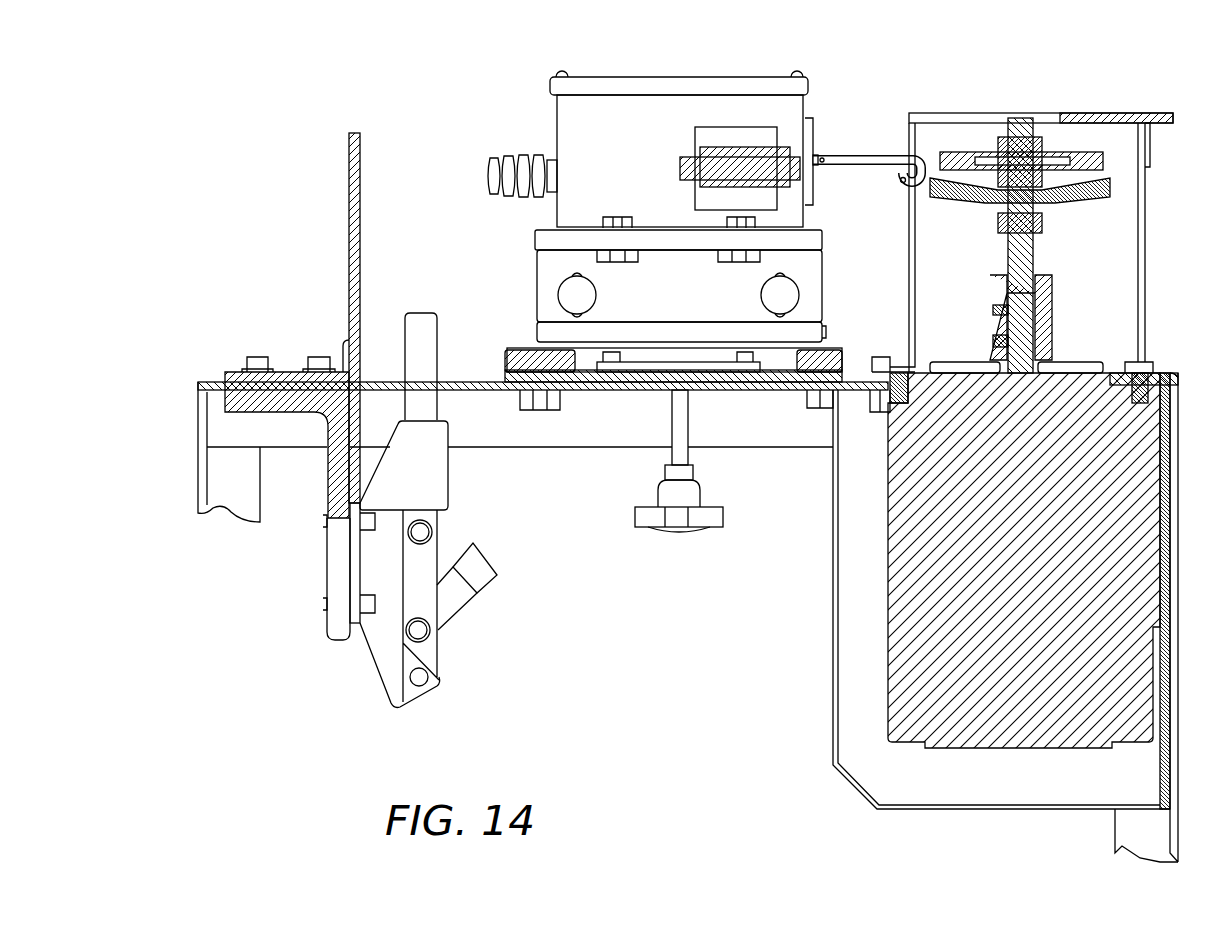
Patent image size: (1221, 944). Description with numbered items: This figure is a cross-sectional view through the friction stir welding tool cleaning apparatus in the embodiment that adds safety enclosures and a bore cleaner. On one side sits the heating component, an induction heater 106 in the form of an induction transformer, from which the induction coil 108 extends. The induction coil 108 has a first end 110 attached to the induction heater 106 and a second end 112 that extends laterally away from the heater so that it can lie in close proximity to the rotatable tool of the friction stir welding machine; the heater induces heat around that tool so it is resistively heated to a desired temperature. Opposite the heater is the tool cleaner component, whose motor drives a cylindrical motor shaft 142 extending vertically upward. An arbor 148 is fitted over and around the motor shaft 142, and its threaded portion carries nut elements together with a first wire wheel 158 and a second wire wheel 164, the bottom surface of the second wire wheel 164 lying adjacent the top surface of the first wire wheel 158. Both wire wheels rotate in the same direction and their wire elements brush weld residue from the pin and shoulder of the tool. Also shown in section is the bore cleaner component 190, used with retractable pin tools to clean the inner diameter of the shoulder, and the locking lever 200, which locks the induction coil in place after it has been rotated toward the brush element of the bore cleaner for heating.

The induction heater 106 is at (645, 77).
The induction coil 108 is at (870, 157).
The first end of induction coil 110 is at (490, 175).
The second end of induction coil 112 is at (927, 165).
The motor shaft 142 is at (1023, 322).
The arbor 148 is at (1020, 262).
The first wire wheel 158 is at (1090, 152).
The second wire wheel 164 is at (1107, 203).
The bore cleaner component 190 is at (380, 560).
The locking lever 200 is at (677, 520).